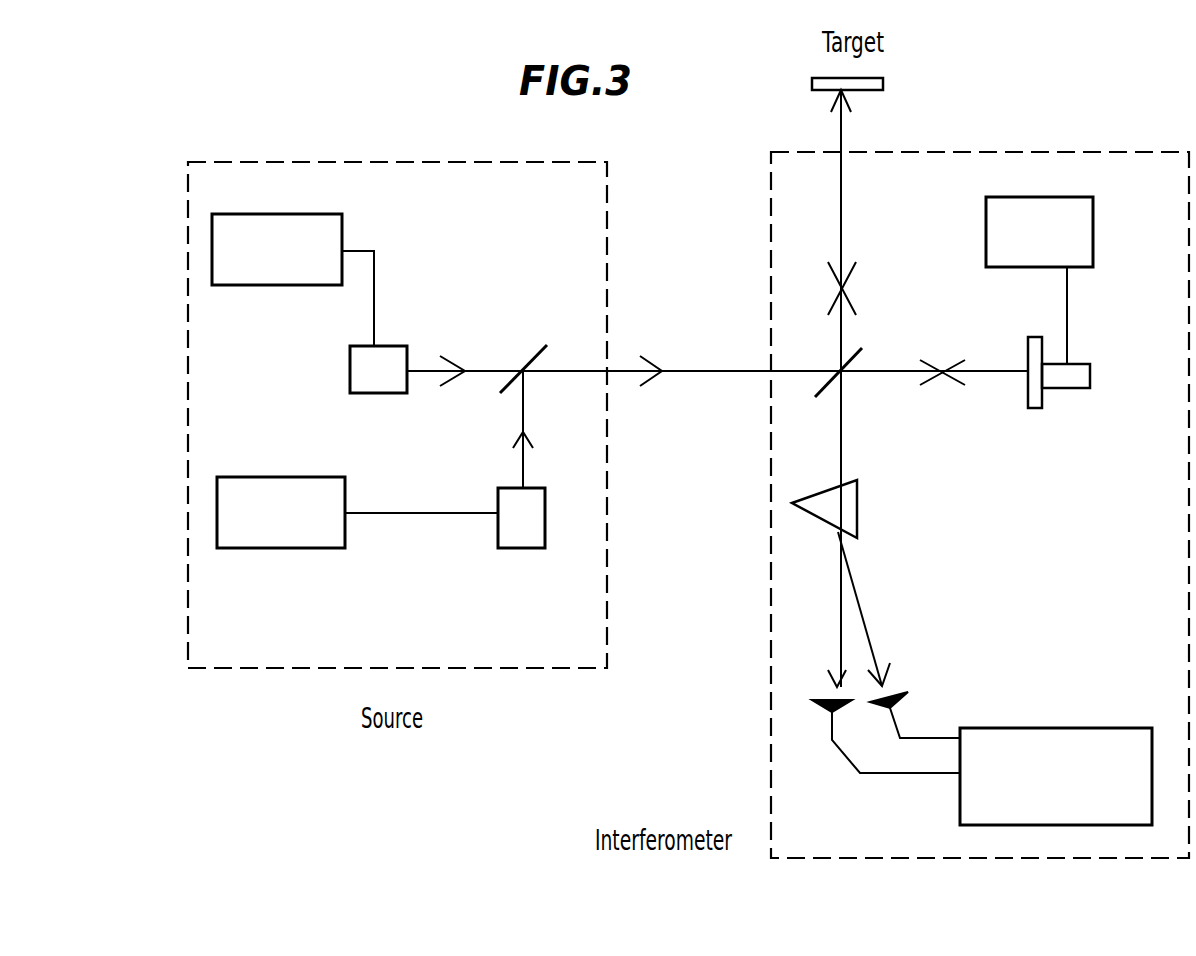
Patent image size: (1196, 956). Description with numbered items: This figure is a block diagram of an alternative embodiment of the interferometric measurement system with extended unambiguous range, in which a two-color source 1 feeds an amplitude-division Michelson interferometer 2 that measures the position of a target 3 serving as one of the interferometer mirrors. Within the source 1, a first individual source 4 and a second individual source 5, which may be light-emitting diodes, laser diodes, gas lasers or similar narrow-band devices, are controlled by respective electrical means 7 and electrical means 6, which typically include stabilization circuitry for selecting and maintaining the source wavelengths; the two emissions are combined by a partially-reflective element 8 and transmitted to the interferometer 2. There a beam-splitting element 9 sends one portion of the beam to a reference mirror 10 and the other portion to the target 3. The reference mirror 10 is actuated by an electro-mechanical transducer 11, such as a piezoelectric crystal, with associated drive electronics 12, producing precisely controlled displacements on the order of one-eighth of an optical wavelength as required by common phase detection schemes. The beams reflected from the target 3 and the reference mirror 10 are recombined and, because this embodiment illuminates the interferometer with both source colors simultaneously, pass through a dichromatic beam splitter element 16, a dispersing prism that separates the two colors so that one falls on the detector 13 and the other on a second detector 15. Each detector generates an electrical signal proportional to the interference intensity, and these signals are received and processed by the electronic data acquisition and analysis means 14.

The two-color source 1 is at (470, 160).
The amplitude-division Michelson interferometer 2 is at (988, 150).
The target 3 is at (812, 84).
The first individual source 4 is at (370, 386).
The second individual source 5 is at (511, 531).
The electrical means 6 is at (263, 530).
The electrical means 7 is at (263, 268).
The partially-reflective element 8 is at (535, 353).
The beam-splitting element 9 is at (856, 352).
The reference mirror 10 is at (1037, 410).
The electro-mechanical transducer 11 is at (1083, 389).
The drive electronics 12 is at (1028, 250).
The detector 13 is at (822, 694).
The electronic data acquisition and analysis means 14 is at (1037, 790).
The second detector 15 is at (897, 688).
The dichromatic beam splitter element 16 is at (815, 492).